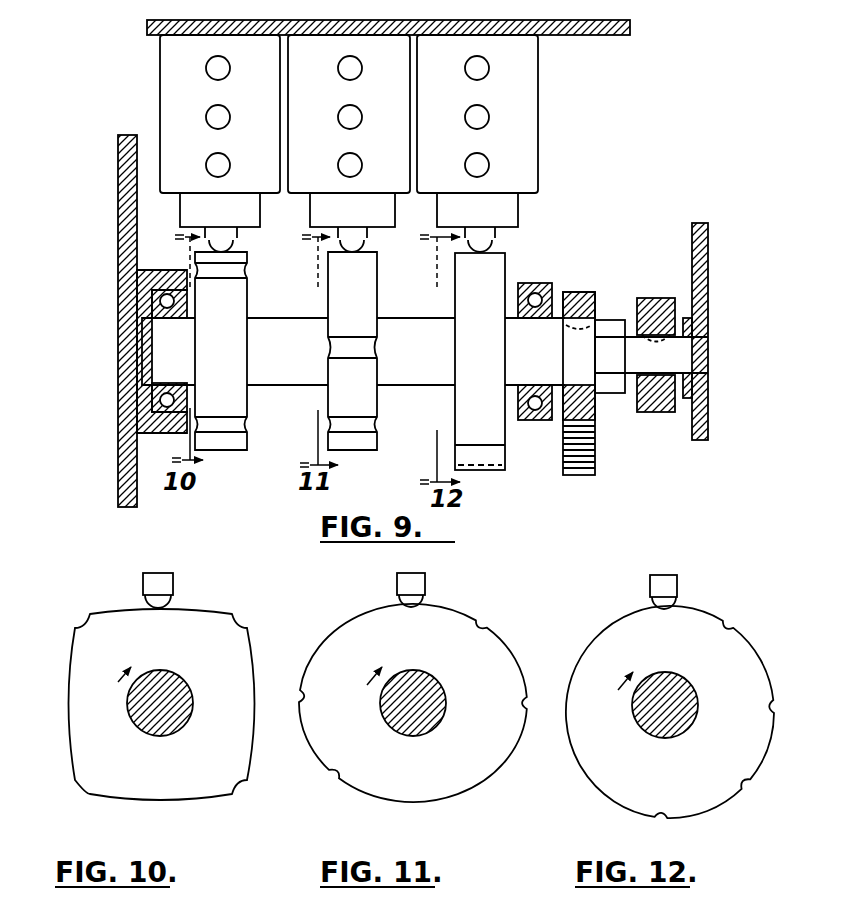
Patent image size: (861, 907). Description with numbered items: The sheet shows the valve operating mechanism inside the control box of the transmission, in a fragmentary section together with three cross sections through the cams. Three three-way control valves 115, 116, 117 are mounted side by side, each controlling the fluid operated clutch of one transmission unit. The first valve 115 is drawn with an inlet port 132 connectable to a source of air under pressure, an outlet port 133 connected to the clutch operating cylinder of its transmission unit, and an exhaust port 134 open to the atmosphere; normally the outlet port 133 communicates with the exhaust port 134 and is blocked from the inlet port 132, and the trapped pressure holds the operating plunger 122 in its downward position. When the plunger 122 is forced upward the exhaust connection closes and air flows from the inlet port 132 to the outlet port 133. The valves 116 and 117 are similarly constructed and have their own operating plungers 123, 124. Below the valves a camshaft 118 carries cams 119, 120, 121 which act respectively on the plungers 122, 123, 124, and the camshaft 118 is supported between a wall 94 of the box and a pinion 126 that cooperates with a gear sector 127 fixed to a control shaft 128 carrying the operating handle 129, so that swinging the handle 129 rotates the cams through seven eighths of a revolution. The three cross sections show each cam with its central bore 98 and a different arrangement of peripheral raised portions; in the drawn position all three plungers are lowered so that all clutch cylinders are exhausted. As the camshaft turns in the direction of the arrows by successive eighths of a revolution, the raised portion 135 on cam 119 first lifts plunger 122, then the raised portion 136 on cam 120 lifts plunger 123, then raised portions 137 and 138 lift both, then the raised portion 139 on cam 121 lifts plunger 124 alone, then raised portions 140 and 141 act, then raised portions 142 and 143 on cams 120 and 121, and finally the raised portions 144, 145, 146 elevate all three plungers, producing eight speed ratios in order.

In FIG. 9, the frame wall 94 is at (113, 237).
In FIG. 10, the shaft bore 98 is at (185, 696).
In FIG. 11, the shaft bore 98 is at (445, 695).
In FIG. 12, the shaft bore 98 is at (695, 695).
In FIG. 9, the three-way control valve 115 is at (160, 82).
In FIG. 9, the three-way control valve 116 is at (335, 161).
In FIG. 9, the three-way control valve 117 is at (523, 101).
In FIG. 9, the camshaft 118 is at (425, 362).
In FIG. 9, the cam 119 is at (247, 402).
In FIG. 10, the cam 119 is at (190, 612).
In FIG. 9, the cam 120 is at (377, 415).
In FIG. 11, the cam 120 is at (440, 612).
In FIG. 9, the cam 121 is at (497, 433).
In FIG. 12, the cam 121 is at (690, 615).
In FIG. 9, the operating plunger 122 is at (233, 242).
In FIG. 10, the operating plunger 122 is at (165, 585).
In FIG. 9, the operating plunger 123 is at (364, 242).
In FIG. 11, the operating plunger 123 is at (400, 585).
In FIG. 9, the operating plunger 124 is at (493, 242).
In FIG. 12, the operating plunger 124 is at (660, 592).
In FIG. 9, the pinion 126 is at (597, 408).
In FIG. 9, the gear sector 127 is at (590, 452).
In FIG. 9, the control shaft 128 is at (693, 345).
In FIG. 9, the operating handle 129 is at (672, 310).
In FIG. 9, the inlet port 132 is at (205, 66).
In FIG. 9, the outlet port 133 is at (205, 118).
In FIG. 9, the exhaust port 134 is at (207, 161).
In FIG. 10, the raised portion 135 is at (85, 622).
In FIG. 11, the raised portion 136 is at (300, 700).
In FIG. 10, the raised cam portion 137 is at (85, 783).
In FIG. 11, the raised cam portion 138 is at (338, 790).
In FIG. 12, the raised portion 139 is at (656, 820).
In FIG. 10, the raised cam portion 140 is at (240, 785).
In FIG. 12, the raised cam portion 141 is at (745, 790).
In FIG. 11, the raised portion 142 is at (525, 705).
In FIG. 12, the raised portion 143 is at (778, 700).
In FIG. 10, the raised portion 144 is at (240, 622).
In FIG. 11, the raised portion 145 is at (485, 612).
In FIG. 12, the raised portion 146 is at (735, 617).